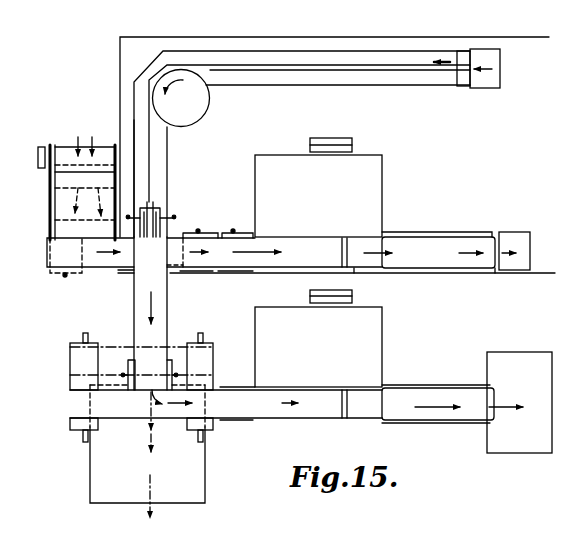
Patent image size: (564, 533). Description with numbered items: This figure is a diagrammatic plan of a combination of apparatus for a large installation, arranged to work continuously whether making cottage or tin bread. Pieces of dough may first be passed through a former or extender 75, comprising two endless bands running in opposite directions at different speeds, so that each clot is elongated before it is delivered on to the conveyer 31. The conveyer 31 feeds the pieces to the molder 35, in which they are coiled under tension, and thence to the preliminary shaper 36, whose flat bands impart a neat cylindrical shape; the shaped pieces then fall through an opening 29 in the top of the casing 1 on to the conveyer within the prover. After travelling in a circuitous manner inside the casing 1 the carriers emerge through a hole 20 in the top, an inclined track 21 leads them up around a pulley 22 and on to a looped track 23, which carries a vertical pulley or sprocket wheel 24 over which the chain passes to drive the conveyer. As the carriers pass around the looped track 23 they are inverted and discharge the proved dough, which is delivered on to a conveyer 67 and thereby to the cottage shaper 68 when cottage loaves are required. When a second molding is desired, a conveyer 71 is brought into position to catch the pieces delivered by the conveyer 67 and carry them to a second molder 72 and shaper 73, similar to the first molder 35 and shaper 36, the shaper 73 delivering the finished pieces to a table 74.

The casing 1 is at (337, 155).
The hole 20 is at (491, 68).
The inclined track 21 is at (302, 144).
The pulley 22 is at (193, 100).
The looped track 23 is at (164, 178).
The vertical pulley or sprocket wheel 24 is at (162, 216).
The opening 29 is at (526, 251).
The conveyer 31 is at (48, 247).
The molder 35 is at (318, 187).
The shaper 36 is at (424, 252).
The conveyer 67 is at (157, 303).
The cottage shaper 68 is at (147, 451).
The conveyer 71 is at (82, 400).
The second molder 72 is at (318, 338).
The shaper 73 is at (422, 387).
The table 74 is at (519, 402).
The former or extender 75 is at (71, 181).